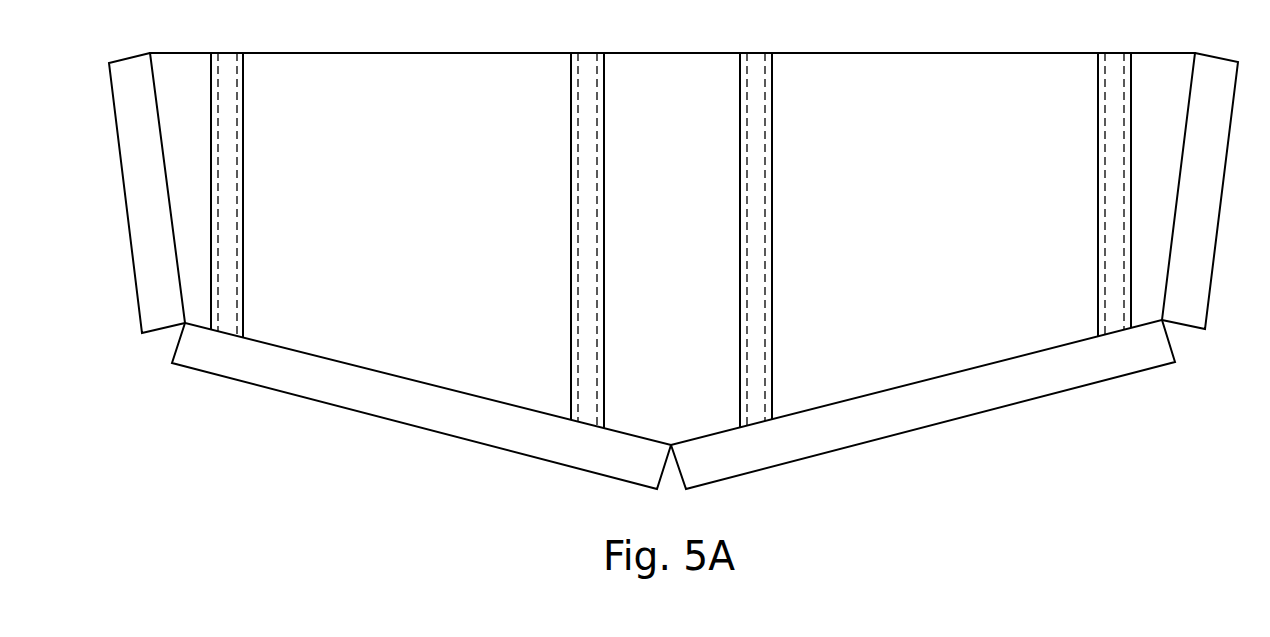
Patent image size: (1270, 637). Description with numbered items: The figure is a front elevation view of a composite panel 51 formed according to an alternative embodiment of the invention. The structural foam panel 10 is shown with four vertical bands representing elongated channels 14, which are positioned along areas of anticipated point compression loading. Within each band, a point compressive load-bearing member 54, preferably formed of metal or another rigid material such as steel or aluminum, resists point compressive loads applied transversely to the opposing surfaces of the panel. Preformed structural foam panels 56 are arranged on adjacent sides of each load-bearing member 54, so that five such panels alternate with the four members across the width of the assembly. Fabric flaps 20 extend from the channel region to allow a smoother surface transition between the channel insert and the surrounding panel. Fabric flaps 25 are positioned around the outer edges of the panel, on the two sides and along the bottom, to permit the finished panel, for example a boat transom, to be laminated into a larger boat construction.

The structural foam panel 10 is at (921, 63).
The elongated channels 14 is at (244, 236).
The fabric flaps 20 is at (570, 170).
The fabric flaps 25 is at (136, 188).
The composite panel 51 is at (1019, 425).
The load-bearing member 54 is at (228, 58).
The preformed structural foam panels 56 is at (671, 127).